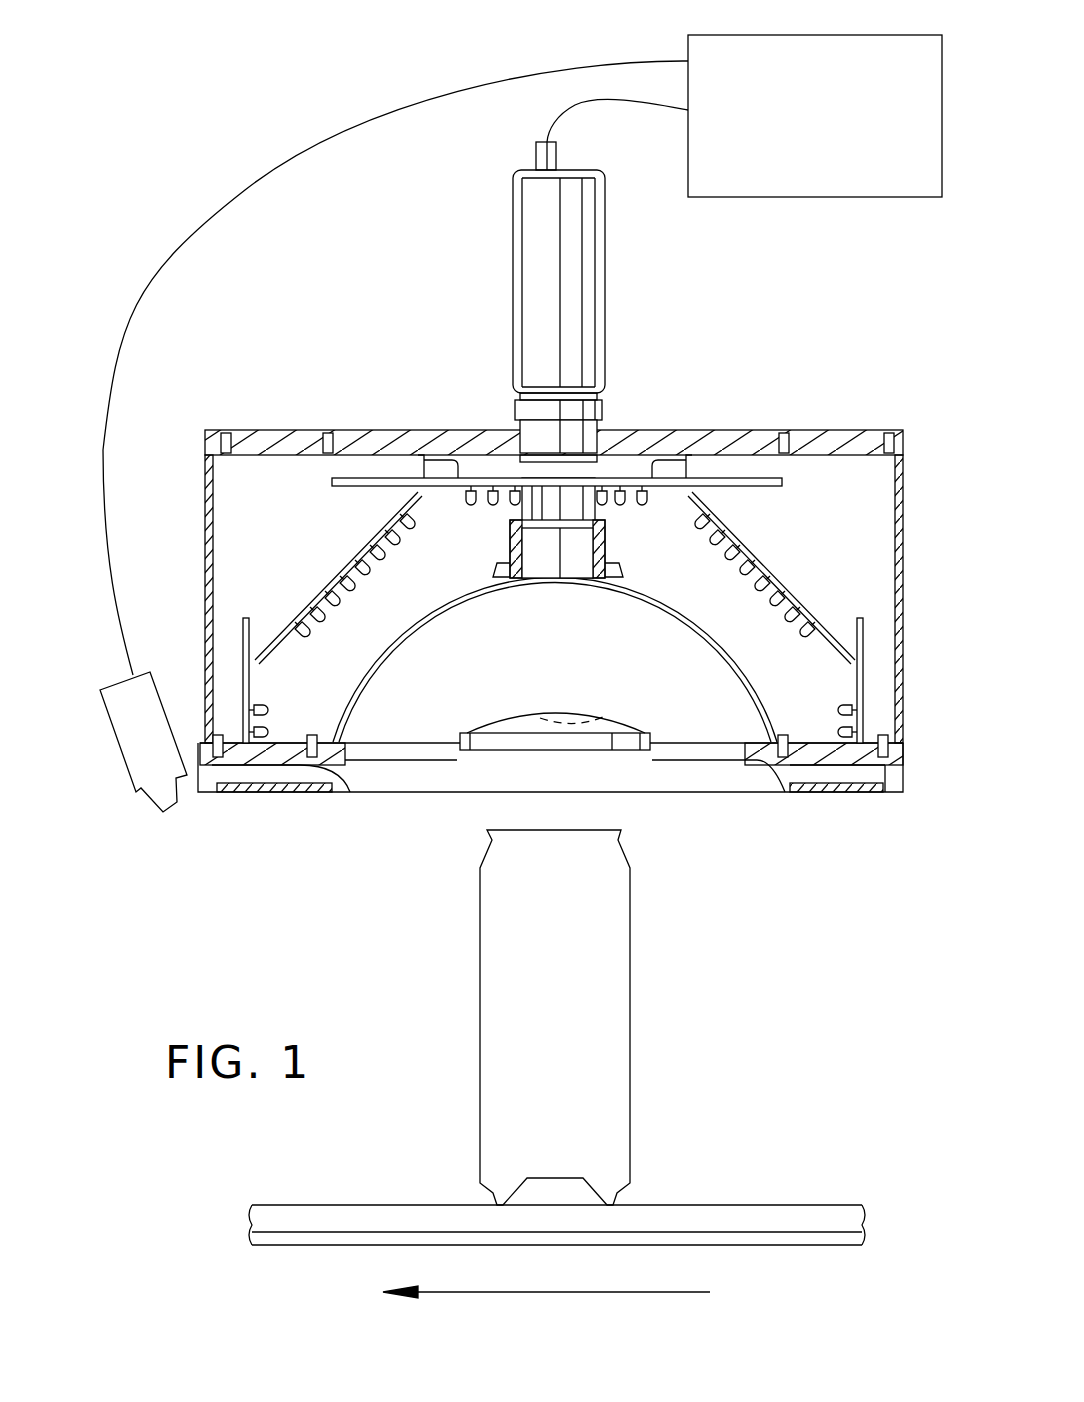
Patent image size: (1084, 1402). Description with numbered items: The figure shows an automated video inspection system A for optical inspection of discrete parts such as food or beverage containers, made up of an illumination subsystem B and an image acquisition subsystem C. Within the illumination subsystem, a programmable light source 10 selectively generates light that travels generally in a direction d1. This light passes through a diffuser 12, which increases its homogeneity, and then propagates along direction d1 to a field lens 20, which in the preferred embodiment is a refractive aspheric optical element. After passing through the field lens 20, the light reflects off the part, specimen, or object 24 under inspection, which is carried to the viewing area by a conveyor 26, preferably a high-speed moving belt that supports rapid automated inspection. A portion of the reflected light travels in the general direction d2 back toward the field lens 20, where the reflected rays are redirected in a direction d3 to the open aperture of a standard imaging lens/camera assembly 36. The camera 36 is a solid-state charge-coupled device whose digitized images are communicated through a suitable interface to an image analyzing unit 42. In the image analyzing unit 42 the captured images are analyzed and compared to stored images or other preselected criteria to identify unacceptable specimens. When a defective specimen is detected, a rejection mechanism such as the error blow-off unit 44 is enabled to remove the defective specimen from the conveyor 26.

The light source 10 is at (768, 555).
The diffuser 12 is at (752, 674).
The field lens 20 is at (603, 712).
The object under inspection 24 is at (640, 1003).
The conveyor 26 is at (702, 1203).
The imaging lens/camera assembly 36 is at (510, 302).
The image analyzing unit 42 is at (830, 88).
The error blow-off unit 44 is at (148, 750).
The automated video inspection system A is at (832, 424).
The illumination subsystem B is at (907, 562).
The image acquisition subsystem C is at (630, 318).
The direction of generated light d1 is at (458, 598).
The direction of reflected light d2 is at (490, 725).
The direction of redirected light d3 is at (531, 585).